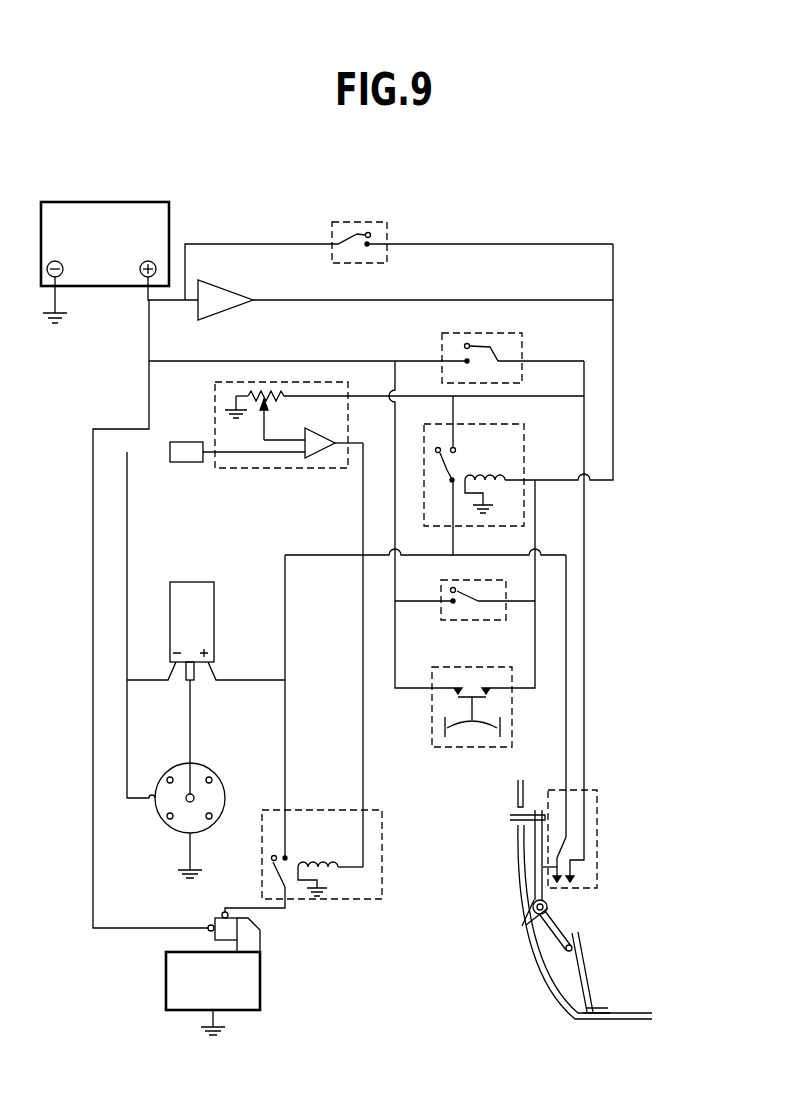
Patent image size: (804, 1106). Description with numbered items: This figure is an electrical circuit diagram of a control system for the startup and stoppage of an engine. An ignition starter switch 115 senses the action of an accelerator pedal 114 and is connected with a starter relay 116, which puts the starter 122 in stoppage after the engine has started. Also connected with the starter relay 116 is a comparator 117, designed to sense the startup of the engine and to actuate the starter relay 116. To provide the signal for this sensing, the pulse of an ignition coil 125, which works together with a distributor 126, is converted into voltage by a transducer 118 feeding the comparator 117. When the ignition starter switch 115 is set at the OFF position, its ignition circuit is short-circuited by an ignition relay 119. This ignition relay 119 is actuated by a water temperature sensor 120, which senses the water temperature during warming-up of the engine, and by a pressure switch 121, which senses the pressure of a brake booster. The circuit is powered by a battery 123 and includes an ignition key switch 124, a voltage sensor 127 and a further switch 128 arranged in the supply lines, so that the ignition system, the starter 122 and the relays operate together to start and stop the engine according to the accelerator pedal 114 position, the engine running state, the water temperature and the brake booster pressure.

The accelerator pedal 114 is at (582, 975).
The ignition starter switch 115 is at (597, 850).
The starter relay 116 is at (382, 862).
The comparator 117 is at (262, 468).
The transducer 118 is at (190, 442).
The ignition relay 119 is at (534, 440).
The water temperature sensor 120 is at (470, 620).
The pressure switch 121 is at (458, 667).
The starter 122 is at (253, 988).
The battery 123 is at (169, 218).
The ignition key switch 124 is at (522, 355).
The ignition coil 125 is at (214, 622).
The distributor 126 is at (216, 775).
The voltage sensor 127 is at (236, 306).
The switch 128 is at (387, 232).